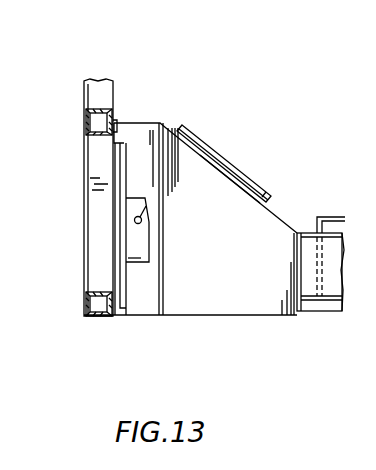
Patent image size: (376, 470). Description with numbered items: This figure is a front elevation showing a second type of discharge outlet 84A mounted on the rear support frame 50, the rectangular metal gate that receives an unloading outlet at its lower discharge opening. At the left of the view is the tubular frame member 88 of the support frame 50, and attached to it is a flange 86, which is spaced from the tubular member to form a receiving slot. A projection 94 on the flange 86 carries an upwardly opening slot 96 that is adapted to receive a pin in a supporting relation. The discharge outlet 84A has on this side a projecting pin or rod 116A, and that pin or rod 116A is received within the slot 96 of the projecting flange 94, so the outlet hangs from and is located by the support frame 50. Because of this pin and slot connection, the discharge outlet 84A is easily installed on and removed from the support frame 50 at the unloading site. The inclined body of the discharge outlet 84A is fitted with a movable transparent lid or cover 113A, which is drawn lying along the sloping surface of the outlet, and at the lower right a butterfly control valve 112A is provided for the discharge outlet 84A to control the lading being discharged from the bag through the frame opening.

The support frame 50 is at (114, 96).
The flange 86 is at (126, 150).
The tubular frame member 88 is at (89, 251).
The projection 94 is at (157, 258).
The upwardly opening slot 96 is at (143, 197).
The projecting pin or rod 116A is at (142, 221).
The movable transparent lid or cover 113A is at (218, 160).
The discharge outlet 84A is at (283, 213).
The butterfly control valve 112A is at (334, 217).